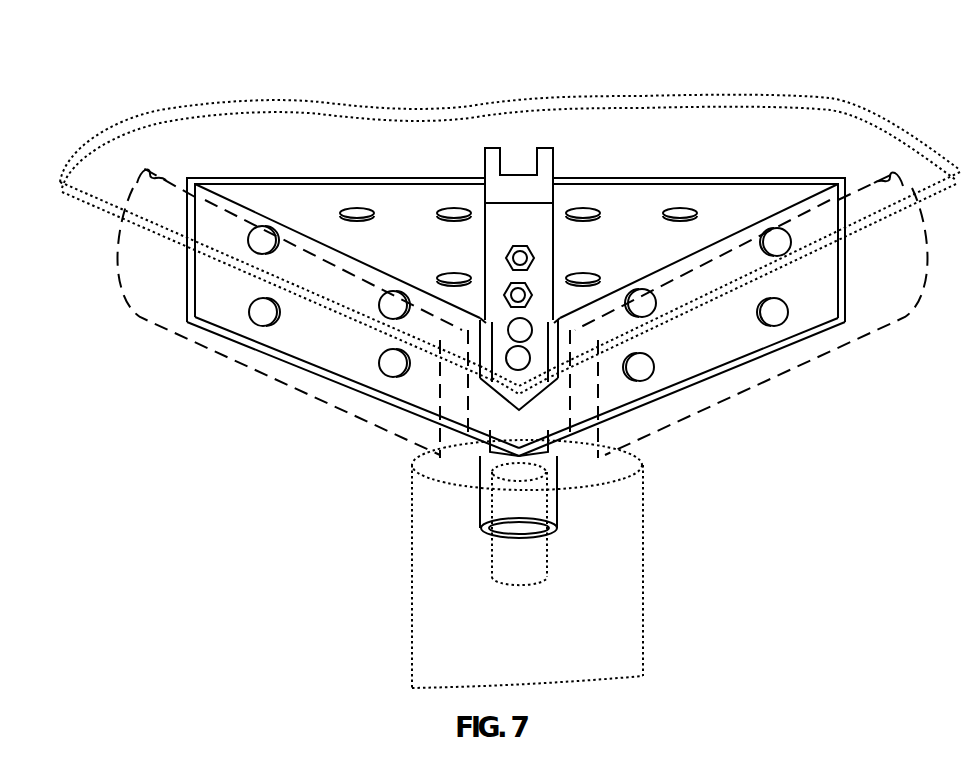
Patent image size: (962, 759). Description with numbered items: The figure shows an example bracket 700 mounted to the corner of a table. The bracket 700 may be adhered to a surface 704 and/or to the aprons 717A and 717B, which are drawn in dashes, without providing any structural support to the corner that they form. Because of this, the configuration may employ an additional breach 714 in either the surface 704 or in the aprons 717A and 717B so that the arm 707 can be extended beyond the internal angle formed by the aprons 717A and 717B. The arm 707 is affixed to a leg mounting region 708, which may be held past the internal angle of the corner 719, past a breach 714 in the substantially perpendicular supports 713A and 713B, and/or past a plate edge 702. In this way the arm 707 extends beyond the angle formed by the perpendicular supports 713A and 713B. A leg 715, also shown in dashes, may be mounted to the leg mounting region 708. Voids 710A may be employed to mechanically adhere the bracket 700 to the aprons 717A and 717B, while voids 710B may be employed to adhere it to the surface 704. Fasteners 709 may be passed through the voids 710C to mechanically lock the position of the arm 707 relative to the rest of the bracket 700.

The bracket 700 is at (70, 57).
The plate edge 702 is at (486, 322).
The surface 704 is at (315, 157).
The arm 707 is at (537, 229).
The leg mounting region 708 is at (540, 462).
The fasteners 709 is at (524, 262).
The voids 710A is at (778, 316).
The voids 710B is at (682, 212).
The voids 710C is at (524, 334).
The perpendicular support 713A is at (347, 347).
The perpendicular support 713B is at (724, 351).
The breach 714 is at (486, 358).
The leg 715 is at (546, 647).
The apron 717A is at (177, 282).
The apron 717B is at (917, 282).
The corner 719 is at (522, 392).